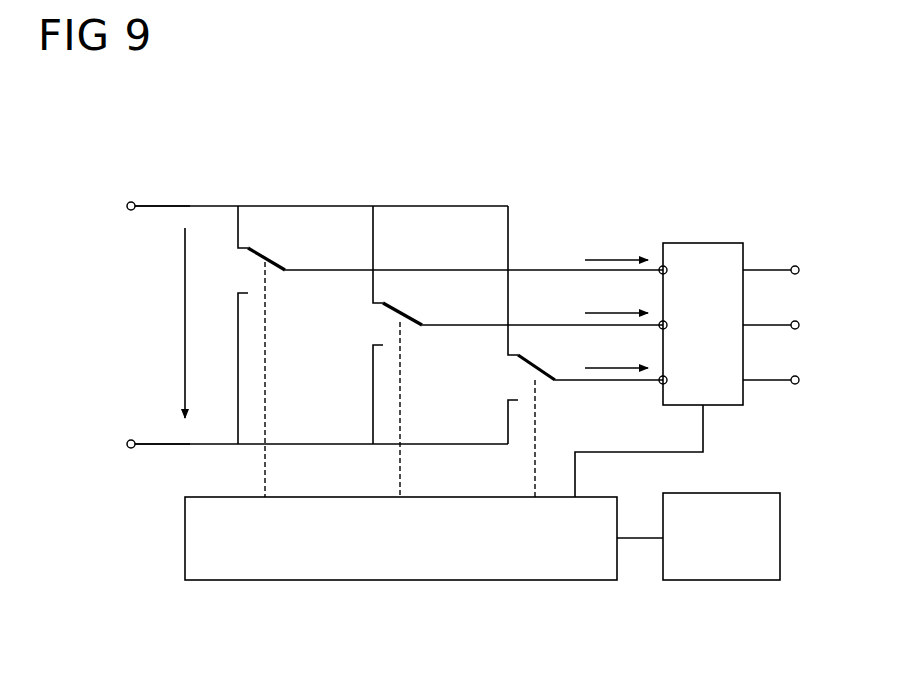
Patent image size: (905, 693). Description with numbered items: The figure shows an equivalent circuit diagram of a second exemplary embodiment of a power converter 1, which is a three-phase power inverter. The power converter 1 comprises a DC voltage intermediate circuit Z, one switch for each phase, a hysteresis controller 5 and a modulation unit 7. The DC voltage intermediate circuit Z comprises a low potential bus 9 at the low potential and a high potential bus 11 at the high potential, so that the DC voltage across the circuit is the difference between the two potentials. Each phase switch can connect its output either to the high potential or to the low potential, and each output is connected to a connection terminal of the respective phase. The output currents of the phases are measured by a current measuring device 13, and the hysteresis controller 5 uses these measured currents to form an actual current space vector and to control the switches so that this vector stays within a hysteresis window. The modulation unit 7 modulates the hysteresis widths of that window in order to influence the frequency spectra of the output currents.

The power converter 1 is at (391, 188).
The hysteresis controller 5 is at (457, 583).
The modulation unit 7 is at (703, 583).
The low potential bus 9 is at (182, 446).
The high potential bus 11 is at (181, 205).
The current measuring device 13 is at (700, 243).
The DC voltage intermediate circuit Z is at (147, 190).